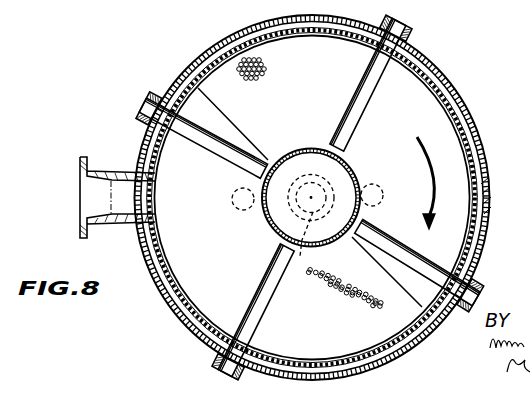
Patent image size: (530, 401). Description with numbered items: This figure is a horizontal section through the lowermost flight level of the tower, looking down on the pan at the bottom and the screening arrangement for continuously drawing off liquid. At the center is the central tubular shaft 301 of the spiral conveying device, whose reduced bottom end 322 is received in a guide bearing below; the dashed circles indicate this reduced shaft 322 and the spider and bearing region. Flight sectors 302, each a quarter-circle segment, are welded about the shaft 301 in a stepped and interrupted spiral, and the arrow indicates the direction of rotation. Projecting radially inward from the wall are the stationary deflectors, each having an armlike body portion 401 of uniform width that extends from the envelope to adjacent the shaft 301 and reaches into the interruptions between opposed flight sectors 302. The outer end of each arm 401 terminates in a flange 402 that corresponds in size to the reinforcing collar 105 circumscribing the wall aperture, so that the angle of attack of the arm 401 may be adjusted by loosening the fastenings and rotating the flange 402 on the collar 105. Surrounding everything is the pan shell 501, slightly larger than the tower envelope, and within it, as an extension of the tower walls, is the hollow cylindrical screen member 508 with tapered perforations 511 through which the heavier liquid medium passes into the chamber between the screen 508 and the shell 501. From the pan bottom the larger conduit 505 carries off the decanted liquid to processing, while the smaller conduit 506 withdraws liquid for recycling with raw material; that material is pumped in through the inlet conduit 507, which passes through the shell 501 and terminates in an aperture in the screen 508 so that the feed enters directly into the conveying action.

The reinforcing collar 105 is at (140, 124).
The central tubular shaft 301 is at (316, 127).
The flight sector 302 is at (250, 113).
The reduced bottom end of the shaft 322 is at (309, 253).
The armlike body portion 401 is at (365, 73).
The flange 402 is at (190, 1).
The pan shell 501 is at (478, 130).
The conduit 505 is at (232, 203).
The conduit 506 is at (390, 195).
The inlet conduit 507 is at (97, 170).
The cylindrical screen member 508 is at (480, 178).
The perforations 511 is at (487, 215).